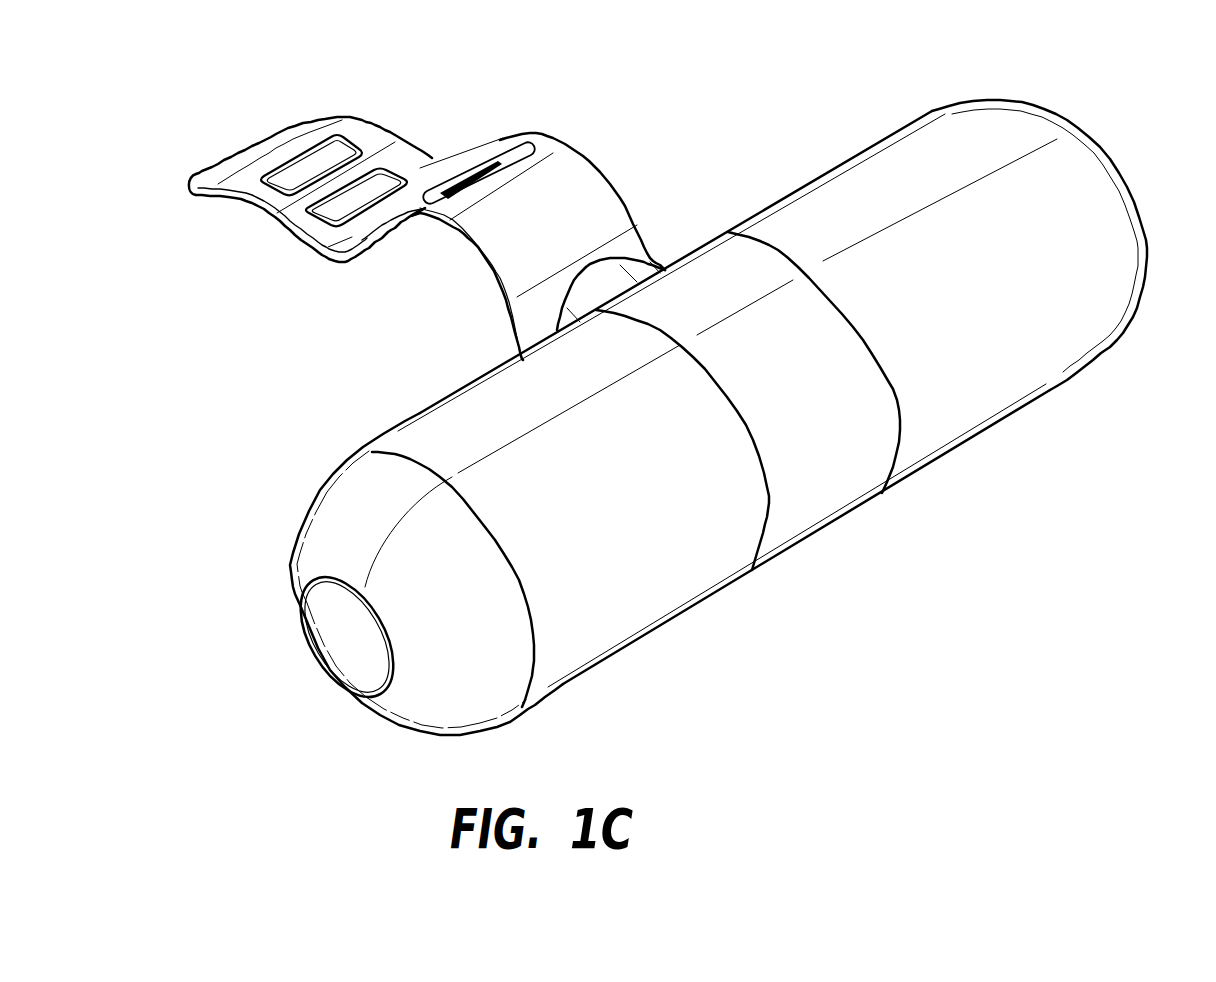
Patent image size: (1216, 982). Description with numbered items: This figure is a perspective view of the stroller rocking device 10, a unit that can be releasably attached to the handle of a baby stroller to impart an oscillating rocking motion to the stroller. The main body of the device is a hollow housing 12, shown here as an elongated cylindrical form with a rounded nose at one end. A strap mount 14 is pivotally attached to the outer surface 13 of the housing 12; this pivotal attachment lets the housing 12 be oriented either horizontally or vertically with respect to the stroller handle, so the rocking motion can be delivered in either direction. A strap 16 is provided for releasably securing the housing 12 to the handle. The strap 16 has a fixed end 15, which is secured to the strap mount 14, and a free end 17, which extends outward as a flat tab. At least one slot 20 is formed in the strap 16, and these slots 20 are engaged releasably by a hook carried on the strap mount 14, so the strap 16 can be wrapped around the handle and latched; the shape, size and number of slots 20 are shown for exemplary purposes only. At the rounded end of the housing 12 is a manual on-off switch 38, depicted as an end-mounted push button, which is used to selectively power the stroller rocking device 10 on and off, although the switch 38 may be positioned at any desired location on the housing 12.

The stroller rocking device 10 is at (1167, 127).
The hollow housing 12 is at (1042, 360).
The outer surface 13 is at (442, 430).
The strap mount 14 is at (600, 230).
The fixed end 15 is at (478, 233).
The strap 16 is at (568, 160).
The free end 17 is at (231, 177).
The slot 20 is at (481, 178).
The manual on-off switch 38 is at (327, 645).